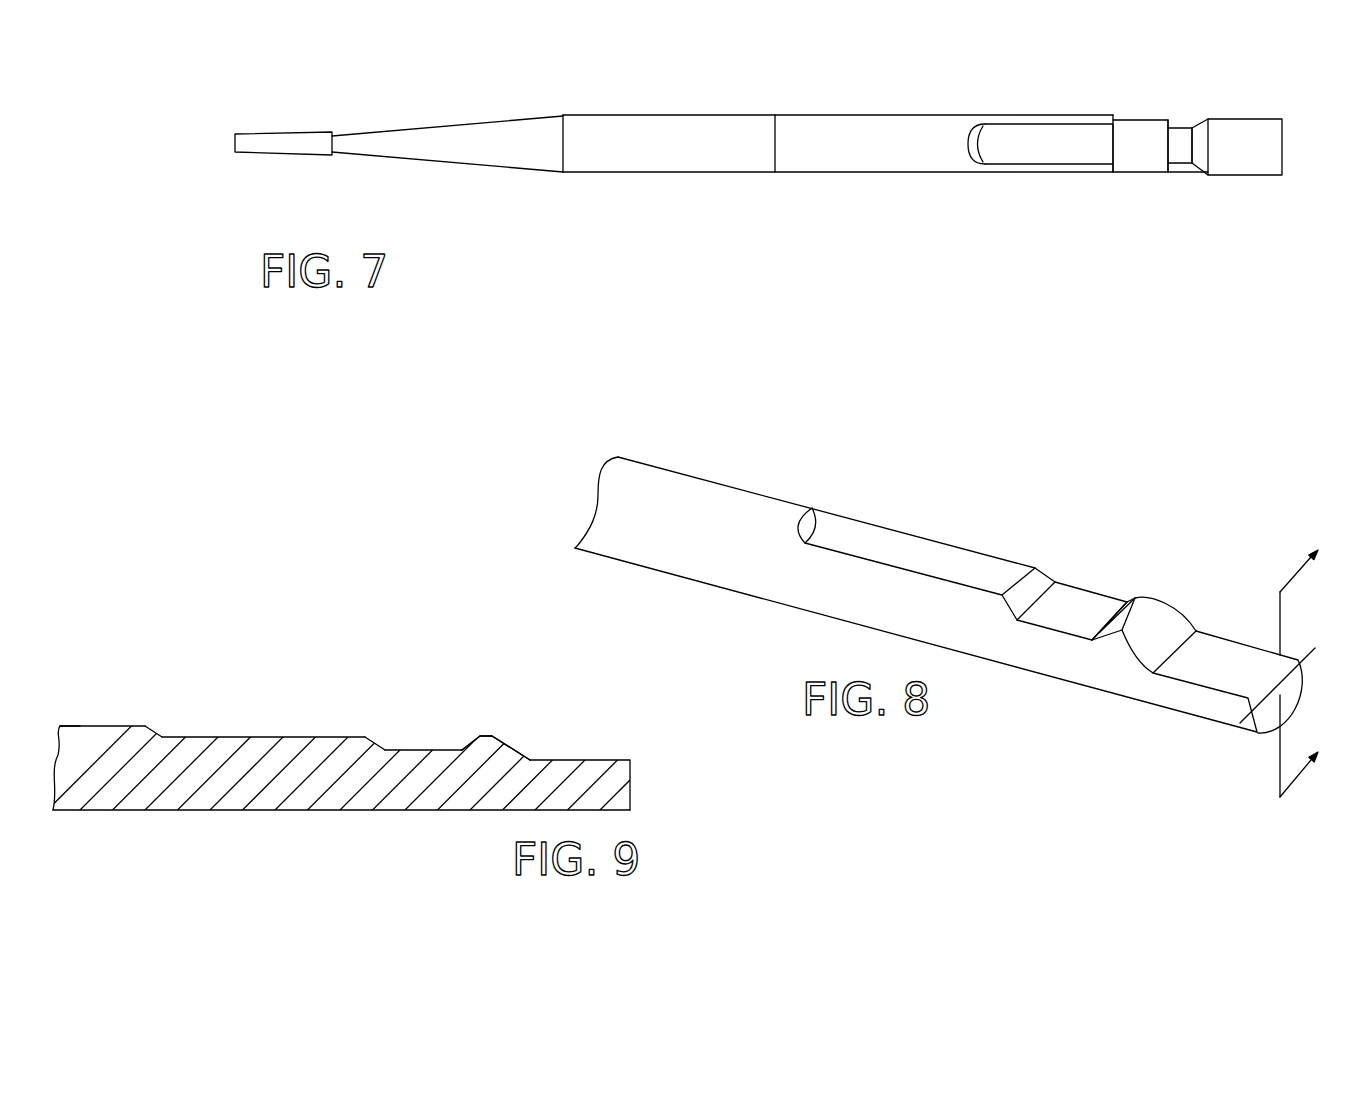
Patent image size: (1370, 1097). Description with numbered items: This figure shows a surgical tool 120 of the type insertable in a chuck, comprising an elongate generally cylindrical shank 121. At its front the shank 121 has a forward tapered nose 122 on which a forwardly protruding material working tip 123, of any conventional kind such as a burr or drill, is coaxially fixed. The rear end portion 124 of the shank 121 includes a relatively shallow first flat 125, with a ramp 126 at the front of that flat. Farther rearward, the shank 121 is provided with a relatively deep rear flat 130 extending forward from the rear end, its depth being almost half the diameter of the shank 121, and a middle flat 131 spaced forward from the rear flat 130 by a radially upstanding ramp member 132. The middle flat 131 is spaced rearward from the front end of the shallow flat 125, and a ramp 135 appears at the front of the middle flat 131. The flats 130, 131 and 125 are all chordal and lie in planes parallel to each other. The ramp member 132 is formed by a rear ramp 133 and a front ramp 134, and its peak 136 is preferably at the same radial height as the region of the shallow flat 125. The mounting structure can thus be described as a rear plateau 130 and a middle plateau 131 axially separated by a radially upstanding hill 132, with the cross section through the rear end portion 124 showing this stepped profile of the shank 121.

In FIG. 7, the surgical tool 120 is at (747, 190).
In FIG. 8, the surgical tool 120 is at (587, 440).
In FIG. 9, the surgical tool 120 is at (153, 664).
In FIG. 7, the shank 121 is at (650, 173).
In FIG. 8, the shank 121 is at (675, 480).
In FIG. 9, the shank 121 is at (72, 732).
In FIG. 7, the forward tapered nose 122 is at (428, 153).
In FIG. 7, the material working tip 123 is at (263, 152).
In FIG. 7, the rear end portion 124 is at (923, 173).
In FIG. 8, the rear end portion 124 is at (810, 598).
In FIG. 9, the rear end portion 124 is at (143, 800).
In FIG. 7, the first flat 125 is at (1057, 153).
In FIG. 8, the first flat 125 is at (905, 545).
In FIG. 9, the first flat 125 is at (240, 737).
In FIG. 7, the ramp 126 is at (970, 164).
In FIG. 8, the ramp 126 is at (815, 515).
In FIG. 9, the ramp 126 is at (160, 735).
In FIG. 7, the rear flat 130 is at (1252, 130).
In FIG. 8, the rear flat 130 is at (1237, 650).
In FIG. 9, the rear flat 130 is at (606, 762).
In FIG. 7, the middle flat 131 is at (1130, 127).
In FIG. 8, the middle flat 131 is at (1075, 605).
In FIG. 9, the middle flat 131 is at (428, 752).
In FIG. 7, the ramp member 132 is at (1186, 114).
In FIG. 8, the ramp member 132 is at (1115, 643).
In FIG. 9, the ramp member 132 is at (483, 752).
In FIG. 7, the rear ramp 133 is at (1205, 128).
In FIG. 8, the rear ramp 133 is at (1173, 623).
In FIG. 9, the rear ramp 133 is at (520, 752).
In FIG. 7, the front ramp 134 is at (1128, 130).
In FIG. 8, the front ramp 134 is at (1128, 600).
In FIG. 9, the front ramp 134 is at (470, 742).
In FIG. 7, the ramp 135 is at (1113, 118).
In FIG. 8, the ramp 135 is at (1037, 580).
In FIG. 9, the ramp 135 is at (372, 742).
In FIG. 7, the peak 136 is at (1187, 164).
In FIG. 8, the peak 136 is at (1140, 600).
In FIG. 9, the peak 136 is at (486, 740).